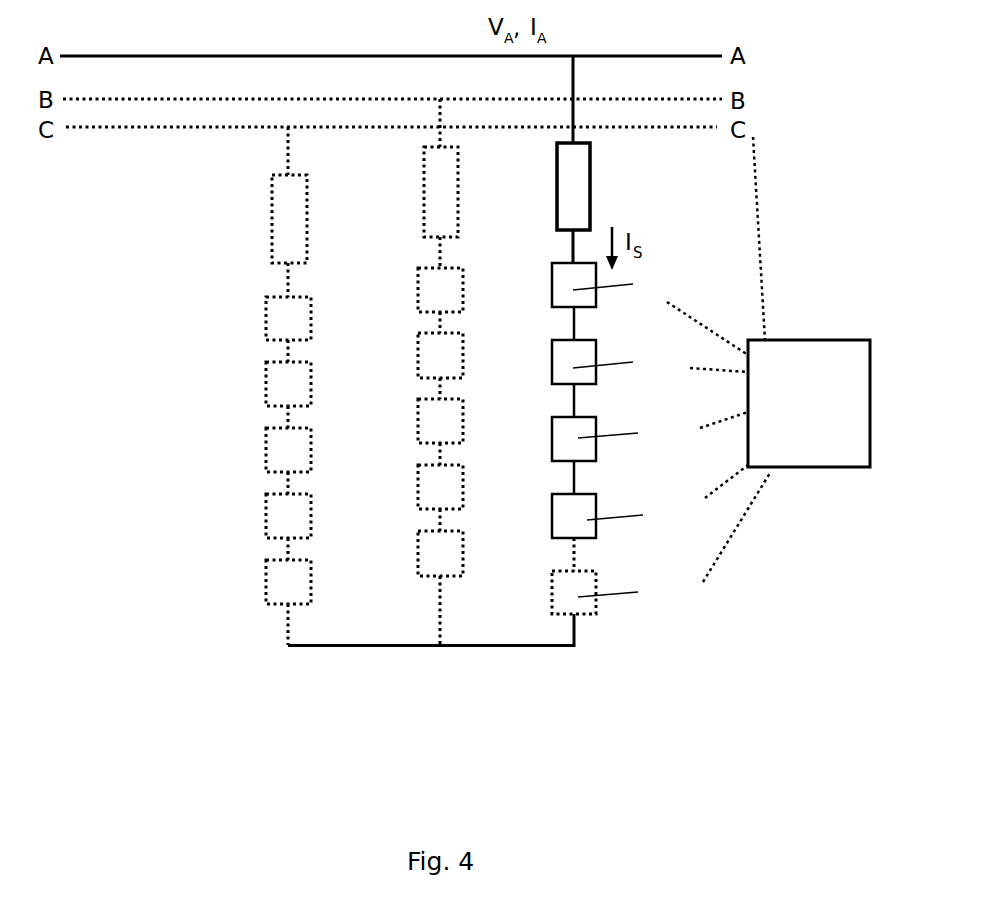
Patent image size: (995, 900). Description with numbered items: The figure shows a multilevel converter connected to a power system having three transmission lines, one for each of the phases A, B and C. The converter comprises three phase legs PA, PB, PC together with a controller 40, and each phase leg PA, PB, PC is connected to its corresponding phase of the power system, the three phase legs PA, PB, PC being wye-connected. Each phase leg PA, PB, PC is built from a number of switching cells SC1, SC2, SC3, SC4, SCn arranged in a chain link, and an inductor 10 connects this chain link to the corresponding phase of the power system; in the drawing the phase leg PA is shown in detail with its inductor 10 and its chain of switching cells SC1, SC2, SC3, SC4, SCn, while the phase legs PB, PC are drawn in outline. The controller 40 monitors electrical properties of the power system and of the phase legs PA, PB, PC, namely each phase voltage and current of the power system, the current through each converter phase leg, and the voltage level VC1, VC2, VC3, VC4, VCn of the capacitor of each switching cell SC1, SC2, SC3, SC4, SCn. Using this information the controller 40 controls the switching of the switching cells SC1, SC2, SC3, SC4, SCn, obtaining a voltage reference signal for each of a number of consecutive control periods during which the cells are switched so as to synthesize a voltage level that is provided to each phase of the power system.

The inductor 10 is at (585, 159).
The controller 40 is at (788, 381).
The phase leg PA is at (551, 186).
The phase leg PB is at (418, 372).
The phase leg PC is at (259, 386).
The voltage level of the capacitor VC1 is at (544, 285).
The voltage level of the capacitor VC2 is at (544, 362).
The voltage level of the capacitor VC3 is at (544, 439).
The voltage level of the capacitor VC4 is at (544, 516).
The voltage level of the capacitor VCn is at (544, 592).
The switching cell SC1 is at (626, 285).
The switching cell SC2 is at (626, 364).
The switching cell SC3 is at (631, 434).
The switching cell SC4 is at (638, 515).
The switching cell SCn is at (631, 592).